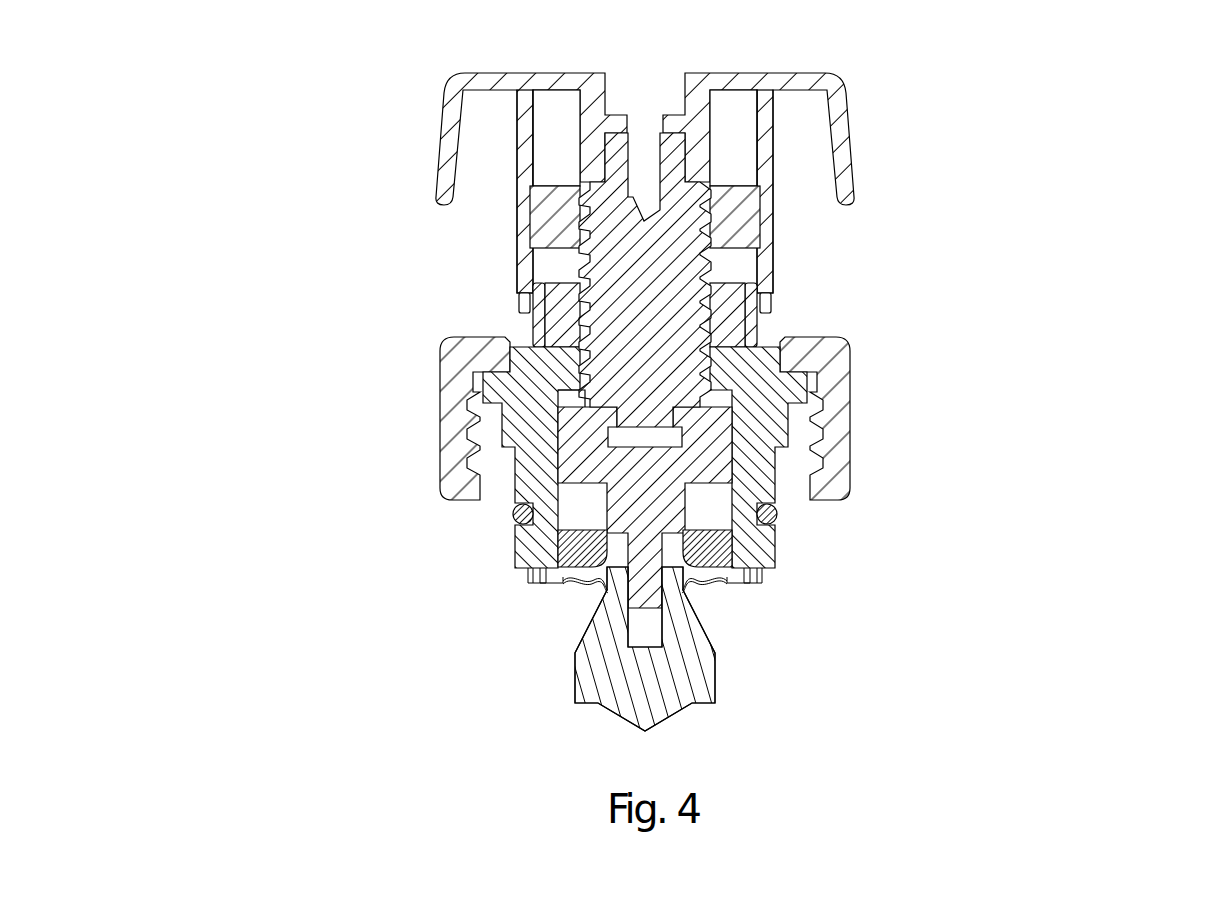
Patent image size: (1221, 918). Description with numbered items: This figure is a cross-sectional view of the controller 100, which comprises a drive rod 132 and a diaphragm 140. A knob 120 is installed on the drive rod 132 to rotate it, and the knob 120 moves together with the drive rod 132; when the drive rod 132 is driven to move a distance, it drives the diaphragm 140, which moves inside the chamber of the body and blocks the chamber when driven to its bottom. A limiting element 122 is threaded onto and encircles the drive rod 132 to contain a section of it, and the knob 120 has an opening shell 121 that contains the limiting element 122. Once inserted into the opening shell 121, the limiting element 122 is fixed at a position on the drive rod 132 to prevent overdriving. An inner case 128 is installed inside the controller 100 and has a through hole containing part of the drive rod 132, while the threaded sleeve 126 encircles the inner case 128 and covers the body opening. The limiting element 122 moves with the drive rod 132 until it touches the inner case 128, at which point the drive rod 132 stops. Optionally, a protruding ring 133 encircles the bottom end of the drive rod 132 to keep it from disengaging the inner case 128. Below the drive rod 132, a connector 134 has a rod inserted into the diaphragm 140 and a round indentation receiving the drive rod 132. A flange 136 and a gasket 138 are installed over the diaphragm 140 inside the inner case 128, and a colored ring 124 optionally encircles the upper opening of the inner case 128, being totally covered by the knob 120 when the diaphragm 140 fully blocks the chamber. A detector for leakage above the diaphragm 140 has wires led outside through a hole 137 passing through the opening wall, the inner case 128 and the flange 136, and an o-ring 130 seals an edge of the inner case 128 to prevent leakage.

The controller 100 is at (1196, 67).
The knob 120 is at (835, 75).
The opening shell 121 is at (776, 263).
The limiting element 122 is at (748, 212).
The colored ring 124 is at (772, 306).
The threaded sleeve 126 is at (852, 357).
The inner case 128 is at (757, 474).
The o-ring 130 is at (775, 517).
The drive rod 132 is at (642, 337).
The protruding ring 133 is at (582, 403).
The connector 134 is at (582, 455).
The flange 136 is at (580, 542).
The hole 137 is at (737, 563).
The gasket 138 is at (563, 582).
The diaphragm 140 is at (590, 659).